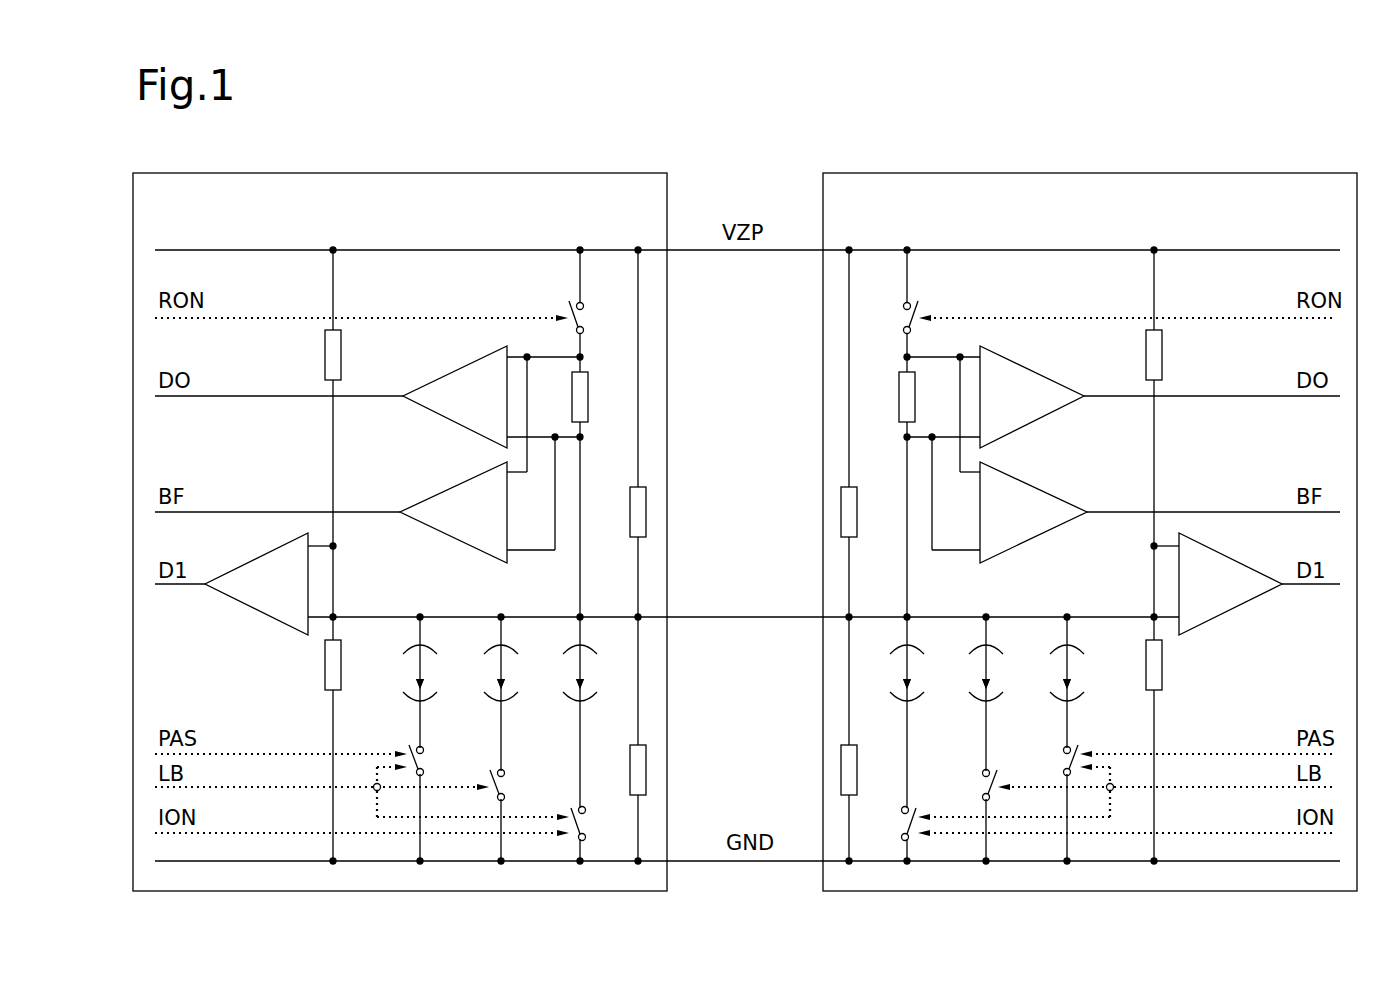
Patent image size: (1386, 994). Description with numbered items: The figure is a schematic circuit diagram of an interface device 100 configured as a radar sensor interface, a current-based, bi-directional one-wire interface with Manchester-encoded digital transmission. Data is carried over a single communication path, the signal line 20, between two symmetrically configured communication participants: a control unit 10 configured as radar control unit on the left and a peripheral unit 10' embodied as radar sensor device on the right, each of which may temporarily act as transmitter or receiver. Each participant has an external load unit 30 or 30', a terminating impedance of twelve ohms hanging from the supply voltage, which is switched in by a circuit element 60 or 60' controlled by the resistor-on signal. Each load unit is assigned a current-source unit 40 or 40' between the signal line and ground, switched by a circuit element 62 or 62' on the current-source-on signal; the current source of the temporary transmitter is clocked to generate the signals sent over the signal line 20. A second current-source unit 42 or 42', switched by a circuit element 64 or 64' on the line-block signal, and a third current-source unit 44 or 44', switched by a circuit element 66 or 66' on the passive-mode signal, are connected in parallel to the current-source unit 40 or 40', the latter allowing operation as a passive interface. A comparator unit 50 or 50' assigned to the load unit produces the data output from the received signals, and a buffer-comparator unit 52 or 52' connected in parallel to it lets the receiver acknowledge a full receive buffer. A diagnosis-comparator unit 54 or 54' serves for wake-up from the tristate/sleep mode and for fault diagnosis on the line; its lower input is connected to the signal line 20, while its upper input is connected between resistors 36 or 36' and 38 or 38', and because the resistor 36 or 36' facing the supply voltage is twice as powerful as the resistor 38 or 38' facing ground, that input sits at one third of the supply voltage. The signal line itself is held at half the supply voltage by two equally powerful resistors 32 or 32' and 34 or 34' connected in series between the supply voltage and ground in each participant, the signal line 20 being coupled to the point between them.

The interface device 100 is at (1302, 116).
The control unit 10 is at (400, 503).
The peripheral unit 10' is at (1090, 503).
The signal line 20 is at (770, 620).
The load unit 30 is at (599, 395).
The load unit 30' is at (886, 395).
The resistor 32 is at (623, 497).
The resistor 32' is at (868, 497).
The resistor 34 is at (624, 758).
The resistor 34' is at (868, 758).
The resistor 36 is at (301, 355).
The resistor 36' is at (1180, 355).
The resistor 38 is at (312, 668).
The resistor 38' is at (1183, 668).
The current-source unit 40 is at (563, 671).
The current-source unit 40' is at (927, 671).
The second current-source unit 42 is at (483, 671).
The second current-source unit 42' is at (1006, 671).
The third current-source unit 44 is at (402, 671).
The third current-source unit 44' is at (1087, 671).
The comparator unit 50 is at (455, 397).
The comparator unit 50' is at (1032, 397).
The buffer-comparator unit 52 is at (453, 512).
The buffer-comparator unit 52' is at (1033, 512).
The diagnosis-comparator unit 54 is at (256, 584).
The diagnosis-comparator unit 54' is at (1230, 584).
The circuit element 60 is at (598, 309).
The circuit element 60' is at (888, 309).
The circuit element 62 is at (600, 825).
The circuit element 62' is at (889, 825).
The circuit element 64 is at (520, 783).
The circuit element 64' is at (959, 783).
The circuit element 66 is at (436, 757).
The circuit element 66' is at (1050, 757).